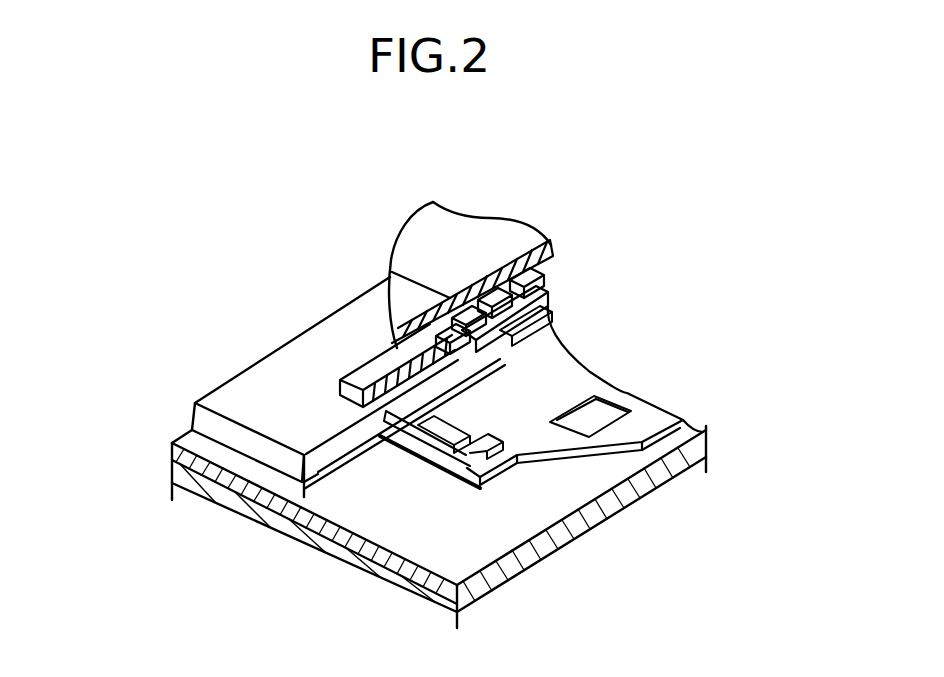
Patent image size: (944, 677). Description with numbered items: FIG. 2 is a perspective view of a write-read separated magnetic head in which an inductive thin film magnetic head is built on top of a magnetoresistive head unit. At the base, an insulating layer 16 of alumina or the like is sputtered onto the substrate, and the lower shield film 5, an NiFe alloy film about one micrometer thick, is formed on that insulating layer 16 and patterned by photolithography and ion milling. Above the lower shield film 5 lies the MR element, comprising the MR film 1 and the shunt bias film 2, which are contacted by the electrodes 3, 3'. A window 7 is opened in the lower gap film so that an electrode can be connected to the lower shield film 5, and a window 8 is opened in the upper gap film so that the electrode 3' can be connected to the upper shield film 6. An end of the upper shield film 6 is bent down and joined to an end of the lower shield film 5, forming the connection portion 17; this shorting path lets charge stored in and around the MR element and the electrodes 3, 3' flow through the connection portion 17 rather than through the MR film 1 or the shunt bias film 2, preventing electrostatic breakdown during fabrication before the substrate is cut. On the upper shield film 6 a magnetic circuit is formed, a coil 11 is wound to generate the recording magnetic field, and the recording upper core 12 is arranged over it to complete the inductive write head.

The MR film 1 is at (452, 462).
The shunt bias film 2 is at (435, 445).
The electrode 3 is at (658, 395).
The electrode 3' is at (618, 319).
The lower shield film 5 is at (660, 470).
The upper shield film 6 is at (540, 315).
The window 7 is at (620, 405).
The window 8 is at (455, 352).
The coil 11 is at (545, 280).
The recording upper core 12 is at (549, 250).
The insulating layer 16 is at (550, 571).
The connection portion 17 is at (214, 447).